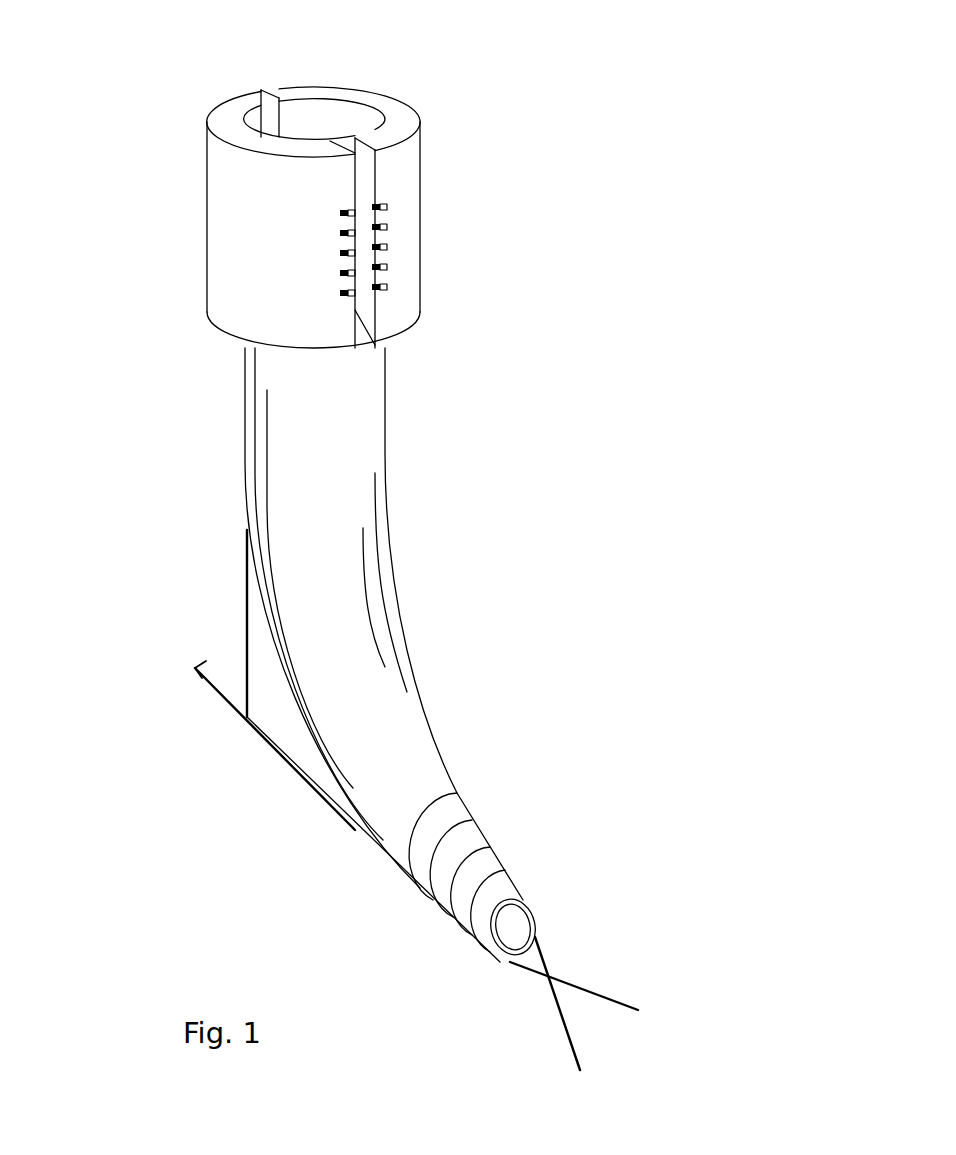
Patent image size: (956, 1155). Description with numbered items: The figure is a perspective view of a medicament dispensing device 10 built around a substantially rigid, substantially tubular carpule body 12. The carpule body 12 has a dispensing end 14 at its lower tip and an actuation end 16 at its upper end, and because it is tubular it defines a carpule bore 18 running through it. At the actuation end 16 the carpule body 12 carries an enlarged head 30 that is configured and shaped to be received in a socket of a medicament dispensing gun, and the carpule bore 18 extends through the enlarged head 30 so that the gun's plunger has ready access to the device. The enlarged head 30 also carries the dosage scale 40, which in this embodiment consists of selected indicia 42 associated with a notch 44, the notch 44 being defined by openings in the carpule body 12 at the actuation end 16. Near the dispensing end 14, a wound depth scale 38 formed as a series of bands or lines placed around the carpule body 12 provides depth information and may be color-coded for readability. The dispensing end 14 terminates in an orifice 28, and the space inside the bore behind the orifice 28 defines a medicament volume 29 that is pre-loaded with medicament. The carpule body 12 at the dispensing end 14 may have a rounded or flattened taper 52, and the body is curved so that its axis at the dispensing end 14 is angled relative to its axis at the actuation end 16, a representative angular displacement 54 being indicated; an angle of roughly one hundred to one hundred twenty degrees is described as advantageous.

The medicament dispensing device 10 is at (125, 466).
The carpule body 12 is at (295, 493).
The dispensing end 14 is at (548, 843).
The actuation end 16 is at (508, 180).
The carpule bore 18 is at (345, 110).
The orifice 28 is at (528, 915).
The medicament volume 29 is at (505, 918).
The enlarged head 30 is at (220, 218).
The wound depth scale 38 is at (477, 825).
The dosage scale 40 is at (449, 243).
The indicia 42 is at (388, 240).
The notch 44 is at (267, 100).
The taper 52 is at (620, 1008).
The angular displacement 54 is at (246, 650).